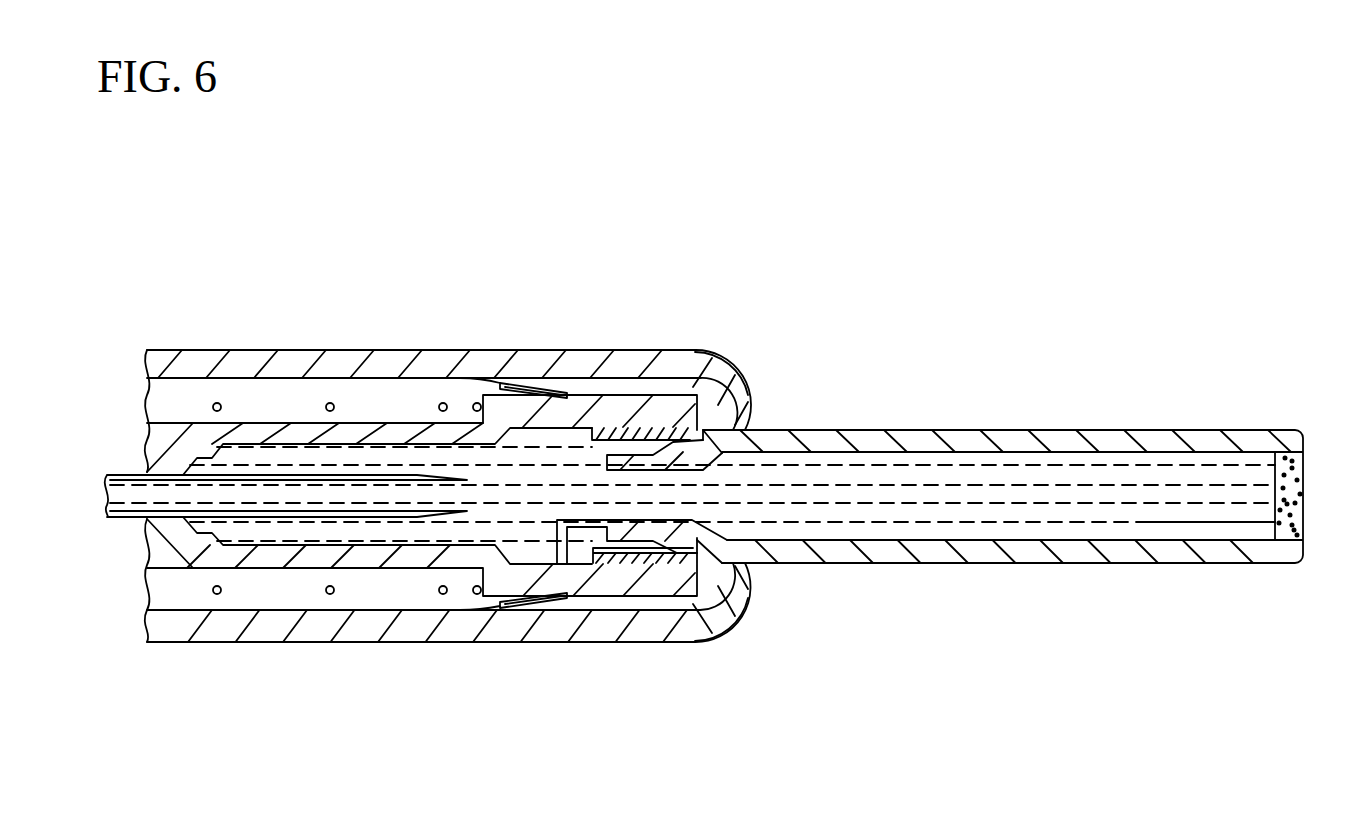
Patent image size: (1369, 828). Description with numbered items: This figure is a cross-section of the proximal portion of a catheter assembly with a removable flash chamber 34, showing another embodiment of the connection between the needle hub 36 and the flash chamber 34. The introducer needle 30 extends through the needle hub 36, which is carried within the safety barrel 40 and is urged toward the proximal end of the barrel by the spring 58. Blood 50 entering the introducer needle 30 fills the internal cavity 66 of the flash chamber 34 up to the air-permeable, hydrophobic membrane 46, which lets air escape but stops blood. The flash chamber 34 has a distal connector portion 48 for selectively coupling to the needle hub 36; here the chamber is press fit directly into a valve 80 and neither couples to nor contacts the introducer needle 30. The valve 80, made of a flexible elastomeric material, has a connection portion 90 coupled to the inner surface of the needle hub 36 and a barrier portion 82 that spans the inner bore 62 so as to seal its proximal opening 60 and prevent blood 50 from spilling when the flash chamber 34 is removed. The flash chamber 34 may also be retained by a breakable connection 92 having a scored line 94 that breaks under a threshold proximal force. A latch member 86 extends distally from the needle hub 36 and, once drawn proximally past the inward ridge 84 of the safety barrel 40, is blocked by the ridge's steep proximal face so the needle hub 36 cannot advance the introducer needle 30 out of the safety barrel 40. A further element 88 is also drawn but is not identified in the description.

The introducer needle 30 is at (122, 472).
The flash chamber 34 is at (942, 428).
The needle hub 36 is at (350, 432).
The safety barrel 40 is at (267, 628).
The membrane 46 is at (1293, 473).
The distal connector portion 48 is at (612, 468).
The blood 50 is at (1083, 483).
The spring 58 is at (213, 407).
The proximal opening 60 is at (738, 428).
The inner bore 62 is at (549, 452).
The internal cavity 66 is at (1182, 540).
The valve 80 is at (660, 548).
The barrier portion 82 is at (683, 567).
The inward ridge 84 is at (502, 606).
The latch member 86 is at (541, 390).
The wedge 88 is at (507, 383).
The connection portion 90 is at (648, 562).
The breakable connection 92 is at (565, 537).
The scored line 94 is at (582, 542).